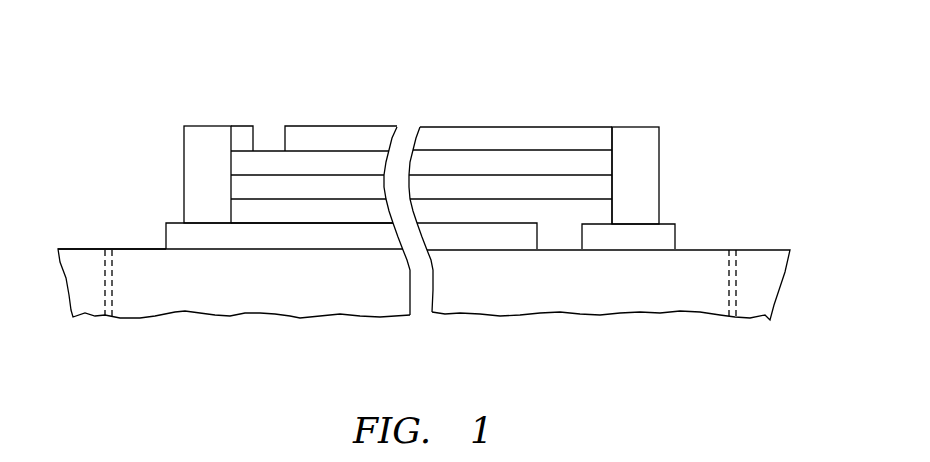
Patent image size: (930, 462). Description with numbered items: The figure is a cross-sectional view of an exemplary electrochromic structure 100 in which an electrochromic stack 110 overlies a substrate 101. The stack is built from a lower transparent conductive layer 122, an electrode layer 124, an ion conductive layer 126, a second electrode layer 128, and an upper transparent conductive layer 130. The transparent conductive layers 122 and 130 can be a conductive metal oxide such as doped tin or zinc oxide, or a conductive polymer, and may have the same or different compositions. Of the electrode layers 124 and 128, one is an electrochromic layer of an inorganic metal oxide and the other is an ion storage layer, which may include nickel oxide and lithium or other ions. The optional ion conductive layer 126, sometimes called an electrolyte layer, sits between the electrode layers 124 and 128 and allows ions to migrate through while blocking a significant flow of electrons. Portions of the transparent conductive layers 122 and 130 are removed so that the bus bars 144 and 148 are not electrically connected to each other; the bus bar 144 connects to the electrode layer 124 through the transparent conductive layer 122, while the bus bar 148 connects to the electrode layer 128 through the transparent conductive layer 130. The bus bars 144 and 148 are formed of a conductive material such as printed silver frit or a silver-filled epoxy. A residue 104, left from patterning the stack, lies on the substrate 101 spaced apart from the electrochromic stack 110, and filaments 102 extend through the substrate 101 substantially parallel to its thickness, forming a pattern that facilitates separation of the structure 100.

The electrochromic structure 100 is at (137, 48).
The substrate 101 is at (660, 296).
The filaments 102 is at (105, 283).
The residue 104 is at (140, 244).
The electrochromic stack 110 is at (527, 108).
The transparent conductive layer 122 is at (173, 235).
The electrode layer 124 is at (275, 212).
The ion conductive layer 126 is at (341, 184).
The electrode layer 128 is at (448, 167).
The transparent conductive layer 130 is at (508, 143).
The bus bar 144 is at (198, 172).
The bus bar 148 is at (652, 168).